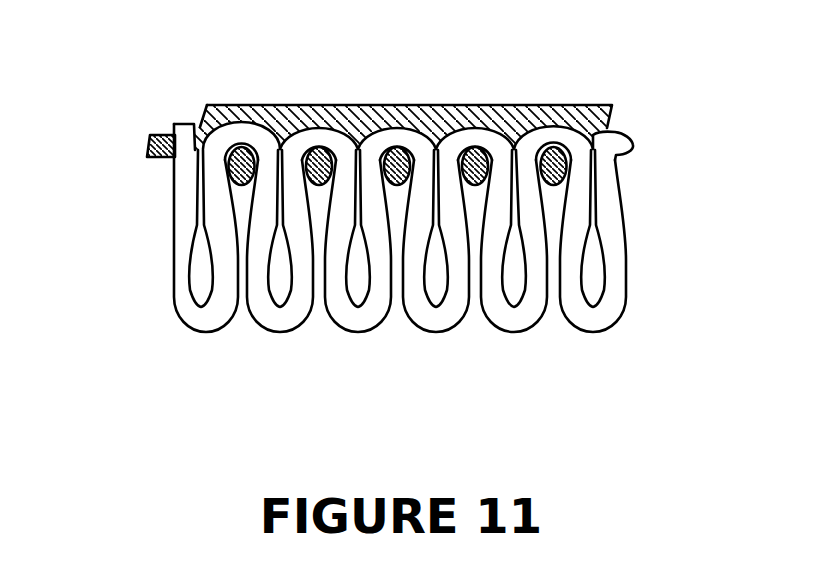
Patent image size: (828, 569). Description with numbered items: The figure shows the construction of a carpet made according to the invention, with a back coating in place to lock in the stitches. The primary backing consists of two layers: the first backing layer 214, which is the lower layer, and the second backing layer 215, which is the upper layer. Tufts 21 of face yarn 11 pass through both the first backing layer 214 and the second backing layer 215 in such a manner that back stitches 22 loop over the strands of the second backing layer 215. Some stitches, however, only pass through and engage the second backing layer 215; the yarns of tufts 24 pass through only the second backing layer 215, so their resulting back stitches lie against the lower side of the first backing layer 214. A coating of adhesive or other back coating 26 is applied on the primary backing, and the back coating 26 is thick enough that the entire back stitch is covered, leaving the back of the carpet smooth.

The face yarn 11 is at (386, 360).
The tufts 21 is at (270, 317).
The back stitches 22 is at (303, 135).
The tufts 24 is at (604, 314).
The back coating 26 is at (550, 115).
The first backing layer 214 is at (160, 133).
The second backing layer 215 is at (233, 184).